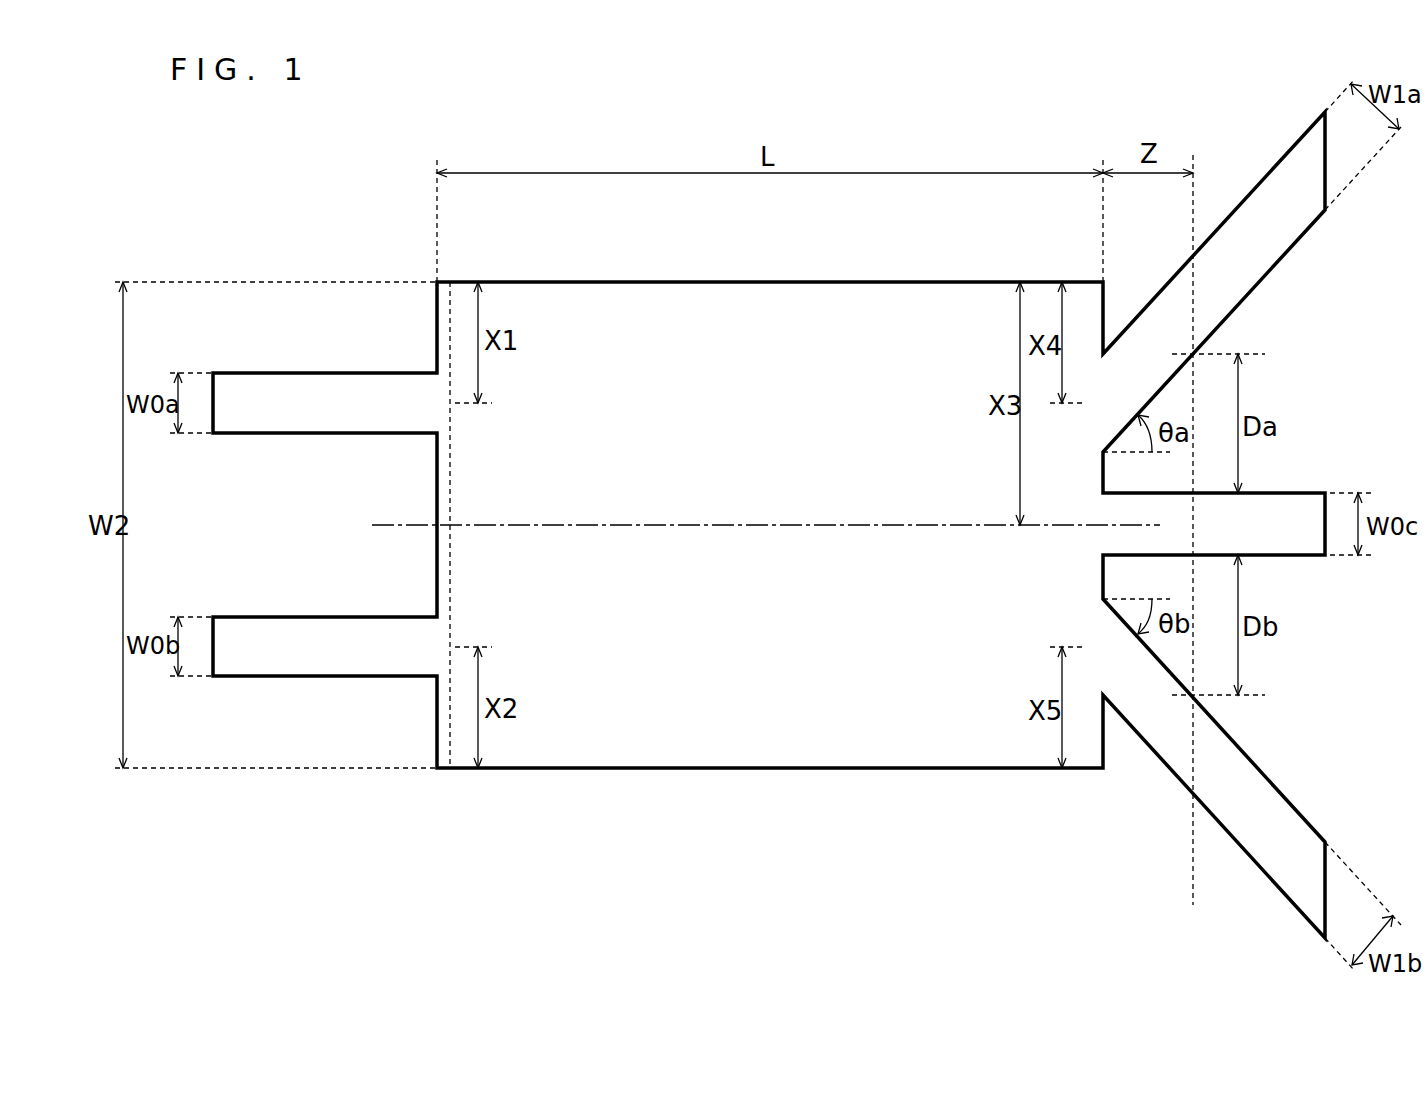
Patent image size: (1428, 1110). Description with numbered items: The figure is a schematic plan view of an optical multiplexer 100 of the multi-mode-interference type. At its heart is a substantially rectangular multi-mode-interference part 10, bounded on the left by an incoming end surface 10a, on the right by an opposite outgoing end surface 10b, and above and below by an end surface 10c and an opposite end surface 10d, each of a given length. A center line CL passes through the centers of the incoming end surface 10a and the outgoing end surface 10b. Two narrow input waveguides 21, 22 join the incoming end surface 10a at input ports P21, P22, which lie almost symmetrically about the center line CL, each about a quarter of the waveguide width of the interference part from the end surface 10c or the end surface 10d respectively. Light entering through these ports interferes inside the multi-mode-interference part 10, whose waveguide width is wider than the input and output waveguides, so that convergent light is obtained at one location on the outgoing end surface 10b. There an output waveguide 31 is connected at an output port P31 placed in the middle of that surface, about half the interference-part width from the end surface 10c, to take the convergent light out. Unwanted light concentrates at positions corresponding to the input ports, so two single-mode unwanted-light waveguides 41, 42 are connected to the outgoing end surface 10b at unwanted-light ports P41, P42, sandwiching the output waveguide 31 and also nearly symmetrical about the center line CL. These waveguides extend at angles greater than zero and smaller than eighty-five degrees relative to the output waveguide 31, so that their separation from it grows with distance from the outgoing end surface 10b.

The optical multiplexer 100 is at (352, 172).
The multi-mode-interference part 10 is at (637, 340).
The incoming end surface 10a is at (450, 487).
The outgoing end surface 10b is at (1090, 560).
The end surface 10c is at (775, 282).
The end surface 10d is at (775, 768).
The input waveguide 21 is at (303, 415).
The input waveguide 22 is at (312, 635).
The output waveguide 31 is at (1288, 512).
The unwanted-light waveguide 41 is at (1275, 225).
The unwanted-light waveguide 42 is at (1275, 825).
The input port P21 is at (437, 403).
The input port P22 is at (437, 647).
The output port P31 is at (1103, 537).
The unwanted-light port P41 is at (1113, 392).
The unwanted-light port P42 is at (1113, 658).
The center line CL is at (410, 527).